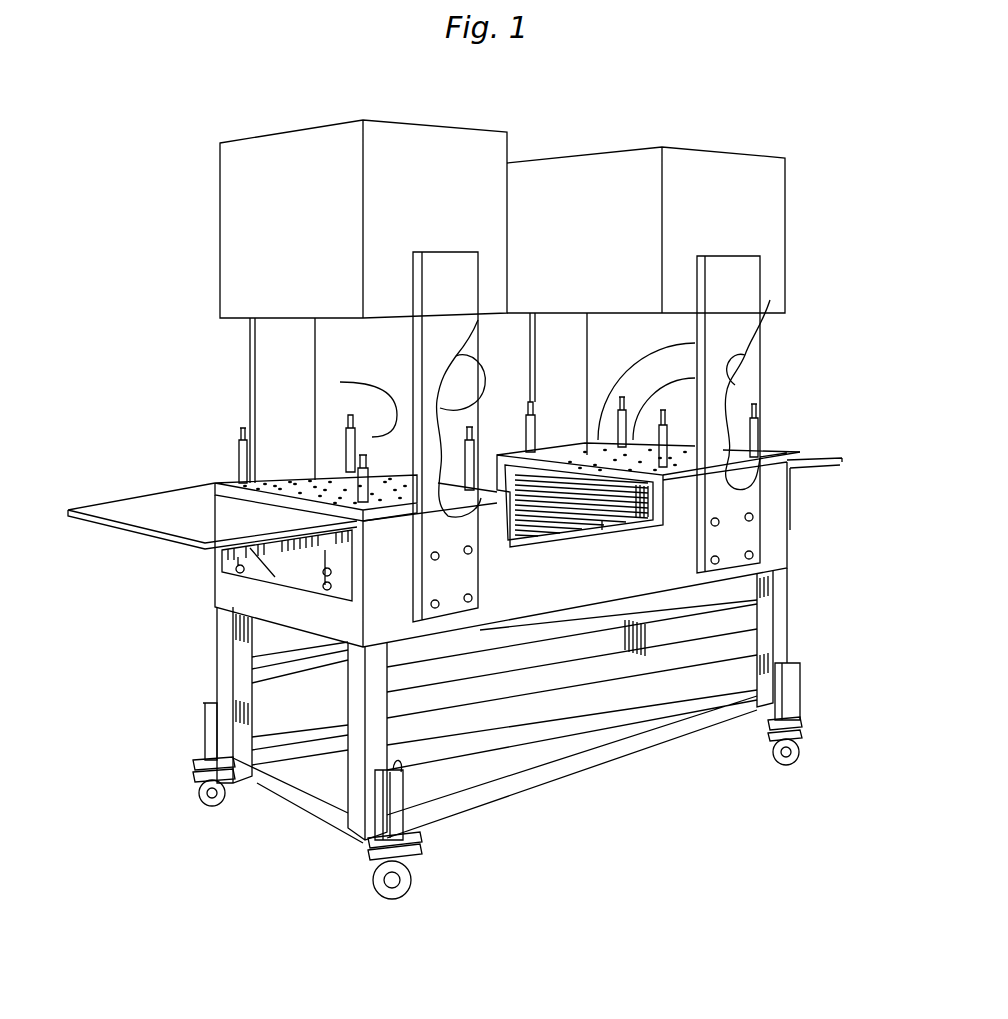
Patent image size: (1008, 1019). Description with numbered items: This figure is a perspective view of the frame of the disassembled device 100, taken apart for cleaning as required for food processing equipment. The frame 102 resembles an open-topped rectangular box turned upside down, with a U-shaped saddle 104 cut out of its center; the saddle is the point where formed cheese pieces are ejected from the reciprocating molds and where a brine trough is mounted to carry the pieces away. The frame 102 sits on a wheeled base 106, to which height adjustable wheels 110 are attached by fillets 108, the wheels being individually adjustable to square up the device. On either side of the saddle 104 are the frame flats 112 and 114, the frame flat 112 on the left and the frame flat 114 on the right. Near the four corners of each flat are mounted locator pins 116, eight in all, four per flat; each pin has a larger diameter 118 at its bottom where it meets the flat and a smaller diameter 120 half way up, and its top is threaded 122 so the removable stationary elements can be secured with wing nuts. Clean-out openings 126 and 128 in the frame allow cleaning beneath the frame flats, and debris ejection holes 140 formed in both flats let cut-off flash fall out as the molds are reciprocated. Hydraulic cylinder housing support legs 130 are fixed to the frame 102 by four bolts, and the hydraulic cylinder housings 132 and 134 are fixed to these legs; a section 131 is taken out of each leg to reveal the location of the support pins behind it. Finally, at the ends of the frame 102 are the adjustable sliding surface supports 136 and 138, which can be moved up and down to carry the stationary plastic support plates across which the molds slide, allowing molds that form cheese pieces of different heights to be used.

The disassembled device 100 is at (220, 175).
The frame 102 is at (650, 565).
The U-shaped saddle 104 is at (605, 535).
The wheeled base 106 is at (218, 635).
The fillets 108 is at (378, 820).
The height adjustable wheels 110 is at (197, 793).
The frame flat 112 is at (232, 483).
The frame flat 114 is at (707, 327).
The locator pins 116 is at (239, 443).
The larger diameter 118 is at (758, 428).
The smaller diameter 120 is at (755, 413).
The threaded top 122 is at (340, 382).
The clean-out opening 126 is at (514, 545).
The clean-out opening 128 is at (591, 498).
The hydraulic cylinder housing support legs 130 is at (253, 335).
The section 131 is at (478, 358).
The hydraulic cylinder housing 132 is at (240, 265).
The hydraulic cylinder housing 134 is at (770, 265).
The adjustable sliding surface support 136 is at (152, 520).
The adjustable sliding surface support 138 is at (815, 466).
The debris ejection holes 140 is at (315, 478).